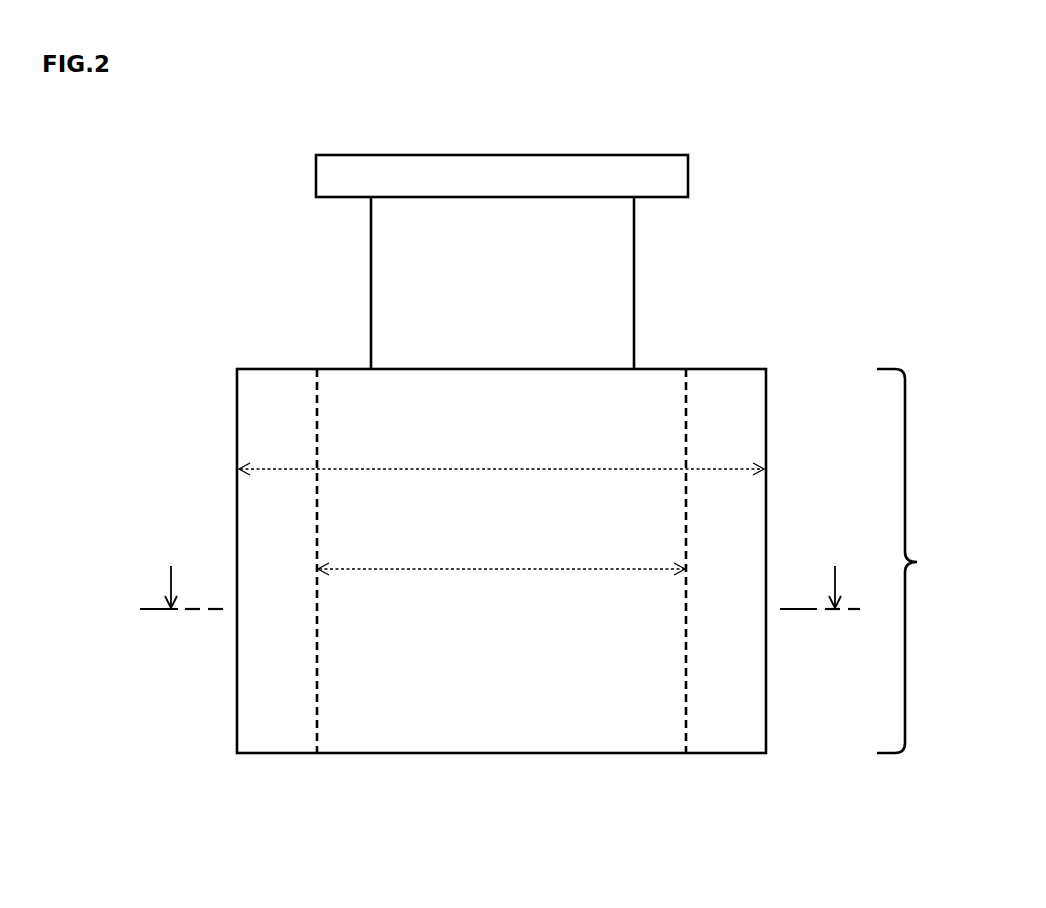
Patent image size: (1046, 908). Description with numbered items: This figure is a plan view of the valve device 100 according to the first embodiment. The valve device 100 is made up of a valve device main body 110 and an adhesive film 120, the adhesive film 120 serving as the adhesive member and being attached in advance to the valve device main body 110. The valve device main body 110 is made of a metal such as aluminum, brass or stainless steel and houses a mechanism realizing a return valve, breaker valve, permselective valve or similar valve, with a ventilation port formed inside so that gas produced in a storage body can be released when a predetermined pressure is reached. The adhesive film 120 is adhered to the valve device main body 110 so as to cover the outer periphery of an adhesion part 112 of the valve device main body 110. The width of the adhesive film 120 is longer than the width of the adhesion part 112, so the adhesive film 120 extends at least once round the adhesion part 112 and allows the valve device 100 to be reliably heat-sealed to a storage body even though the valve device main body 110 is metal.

The valve device 100 is at (553, 477).
The valve device main body 110 is at (596, 150).
The adhesion part 112 is at (601, 533).
The adhesive film 120 is at (730, 368).